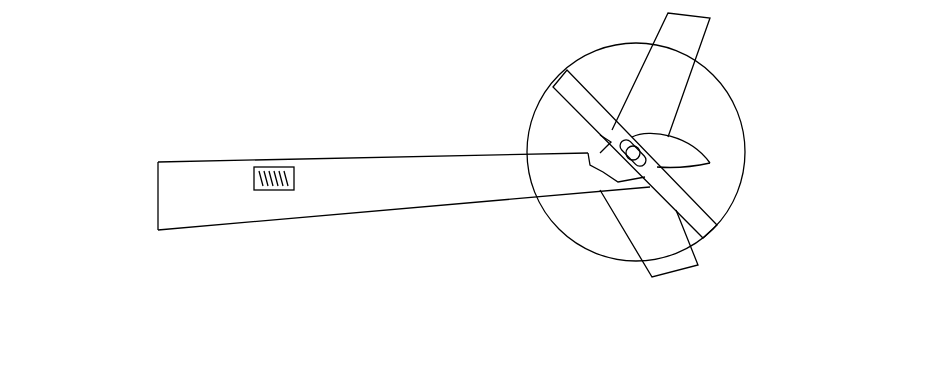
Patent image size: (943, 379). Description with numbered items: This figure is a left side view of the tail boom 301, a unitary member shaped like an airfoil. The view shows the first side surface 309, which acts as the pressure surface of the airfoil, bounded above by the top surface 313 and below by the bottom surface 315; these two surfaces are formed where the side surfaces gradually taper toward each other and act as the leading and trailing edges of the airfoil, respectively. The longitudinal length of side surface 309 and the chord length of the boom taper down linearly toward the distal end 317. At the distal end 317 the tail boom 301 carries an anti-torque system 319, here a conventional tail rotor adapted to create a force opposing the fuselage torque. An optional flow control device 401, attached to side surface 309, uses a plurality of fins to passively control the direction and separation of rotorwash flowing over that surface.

The tail boom 301 is at (172, 87).
The first side surface 309 is at (234, 196).
The top surface 313 is at (352, 144).
The bottom surface 315 is at (436, 219).
The distal end 317 is at (677, 183).
The anti-torque system 319 is at (755, 232).
The flow control device 401 is at (272, 190).